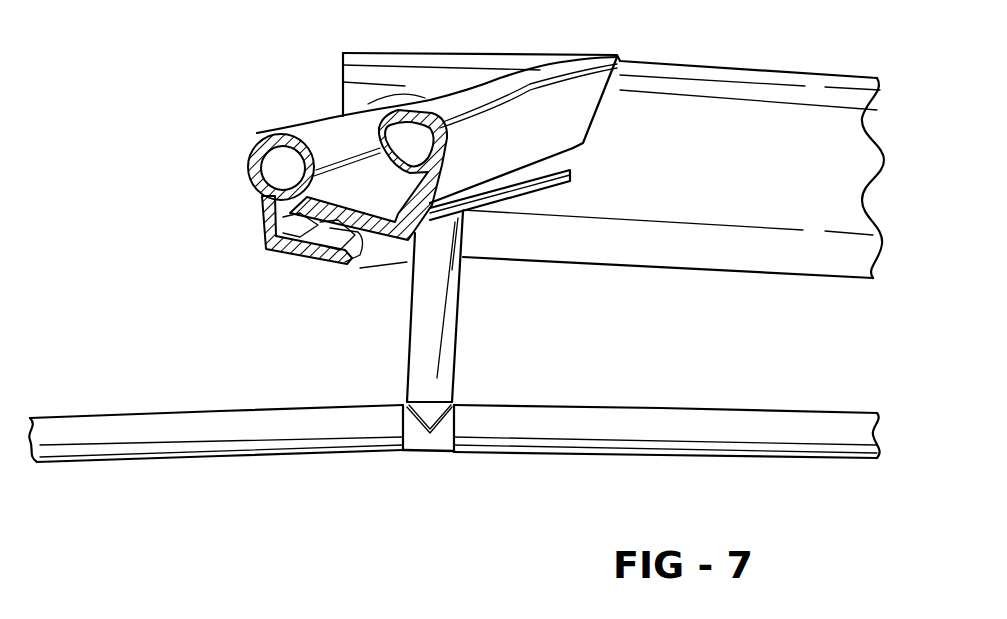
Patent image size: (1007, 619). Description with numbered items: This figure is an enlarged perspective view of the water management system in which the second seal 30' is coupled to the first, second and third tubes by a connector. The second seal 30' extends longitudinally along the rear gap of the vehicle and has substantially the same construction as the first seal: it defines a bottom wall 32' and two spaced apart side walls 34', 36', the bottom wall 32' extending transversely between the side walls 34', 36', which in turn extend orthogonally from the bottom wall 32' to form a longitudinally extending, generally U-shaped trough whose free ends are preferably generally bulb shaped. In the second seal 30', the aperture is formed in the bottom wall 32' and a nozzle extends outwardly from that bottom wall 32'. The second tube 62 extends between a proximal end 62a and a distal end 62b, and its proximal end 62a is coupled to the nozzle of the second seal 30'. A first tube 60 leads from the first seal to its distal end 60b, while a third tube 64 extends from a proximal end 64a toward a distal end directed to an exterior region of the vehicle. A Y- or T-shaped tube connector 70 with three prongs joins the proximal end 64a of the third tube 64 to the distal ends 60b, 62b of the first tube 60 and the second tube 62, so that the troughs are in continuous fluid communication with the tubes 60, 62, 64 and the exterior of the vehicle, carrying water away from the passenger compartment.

The second seal 30' is at (437, 115).
The bottom wall 32' is at (315, 256).
The side wall 34' is at (237, 174).
The side wall 36' is at (501, 163).
The first tube 60 is at (786, 416).
The distal end of first tube 60b is at (495, 443).
The second tube 62 is at (447, 307).
The proximal end of second tube 62a is at (453, 240).
The distal end of second tube 62b is at (444, 384).
The third tube 64 is at (90, 421).
The proximal end of third tube 64a is at (348, 441).
The tube connector 70 is at (425, 448).